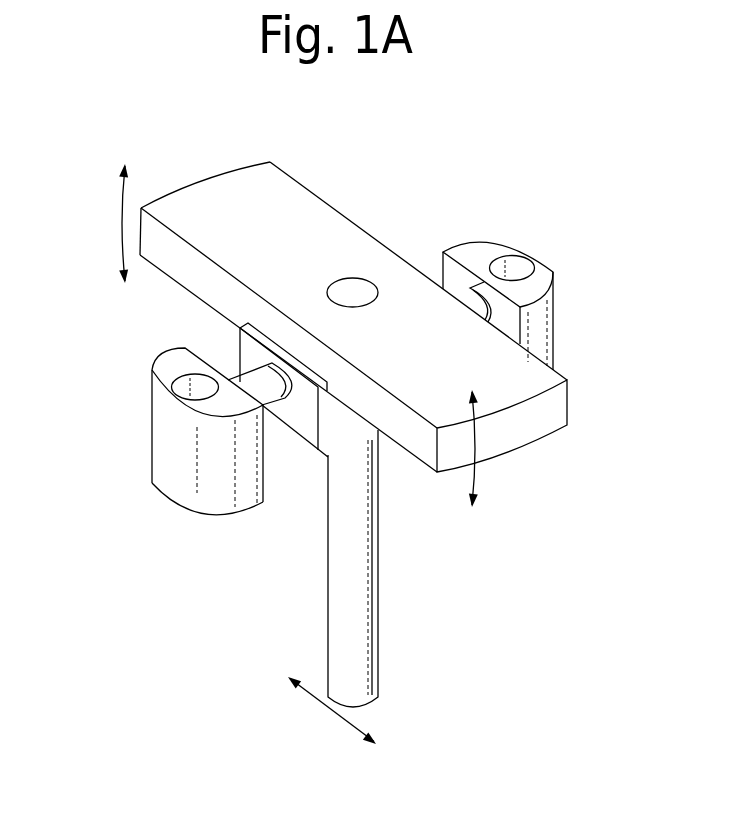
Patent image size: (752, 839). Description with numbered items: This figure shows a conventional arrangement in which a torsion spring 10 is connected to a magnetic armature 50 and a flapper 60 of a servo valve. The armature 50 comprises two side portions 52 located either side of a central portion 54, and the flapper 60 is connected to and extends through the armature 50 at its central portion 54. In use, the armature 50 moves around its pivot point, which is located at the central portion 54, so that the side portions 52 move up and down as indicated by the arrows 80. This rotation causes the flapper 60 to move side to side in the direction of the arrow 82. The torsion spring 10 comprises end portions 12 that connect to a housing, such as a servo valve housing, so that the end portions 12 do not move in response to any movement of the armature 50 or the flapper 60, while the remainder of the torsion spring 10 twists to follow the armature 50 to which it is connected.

The torsion spring 10 is at (115, 436).
The end portions 12 is at (150, 378).
The magnetic armature 50 is at (242, 188).
The side portions 52 is at (237, 257).
The central portion 54 is at (399, 265).
The flapper 60 is at (378, 659).
The arrows 80 is at (122, 200).
The arrow 82 is at (323, 712).